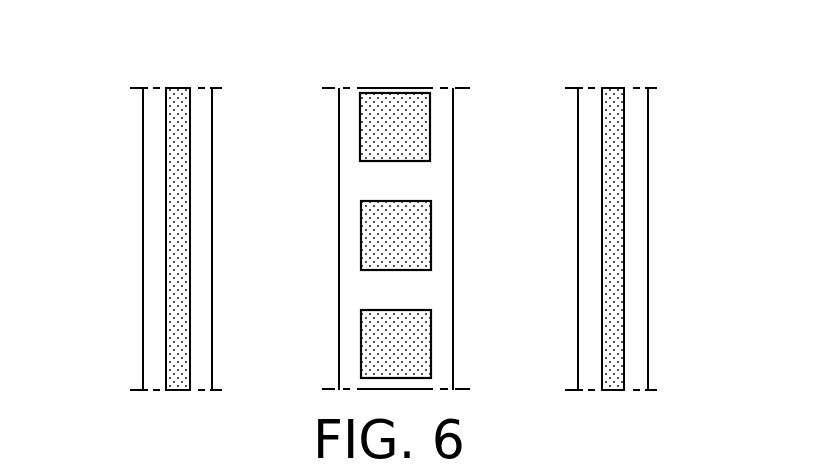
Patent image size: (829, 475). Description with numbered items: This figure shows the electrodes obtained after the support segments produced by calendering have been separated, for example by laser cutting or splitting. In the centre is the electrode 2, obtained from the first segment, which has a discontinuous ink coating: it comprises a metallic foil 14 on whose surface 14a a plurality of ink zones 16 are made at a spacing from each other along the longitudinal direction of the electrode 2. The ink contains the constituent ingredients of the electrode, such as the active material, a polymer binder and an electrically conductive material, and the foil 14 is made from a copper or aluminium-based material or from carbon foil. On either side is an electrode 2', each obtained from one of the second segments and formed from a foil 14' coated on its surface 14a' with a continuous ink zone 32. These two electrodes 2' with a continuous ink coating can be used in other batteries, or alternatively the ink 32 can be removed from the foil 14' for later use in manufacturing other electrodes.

The electrode 2 is at (422, 201).
The electrode 2' is at (342, 201).
The metallic foil 14 is at (450, 239).
The foil 14' is at (341, 239).
The surface 14a is at (441, 238).
The surface 14a' is at (342, 239).
The ink zones 16 is at (395, 110).
The continuous ink zone 32 is at (178, 343).